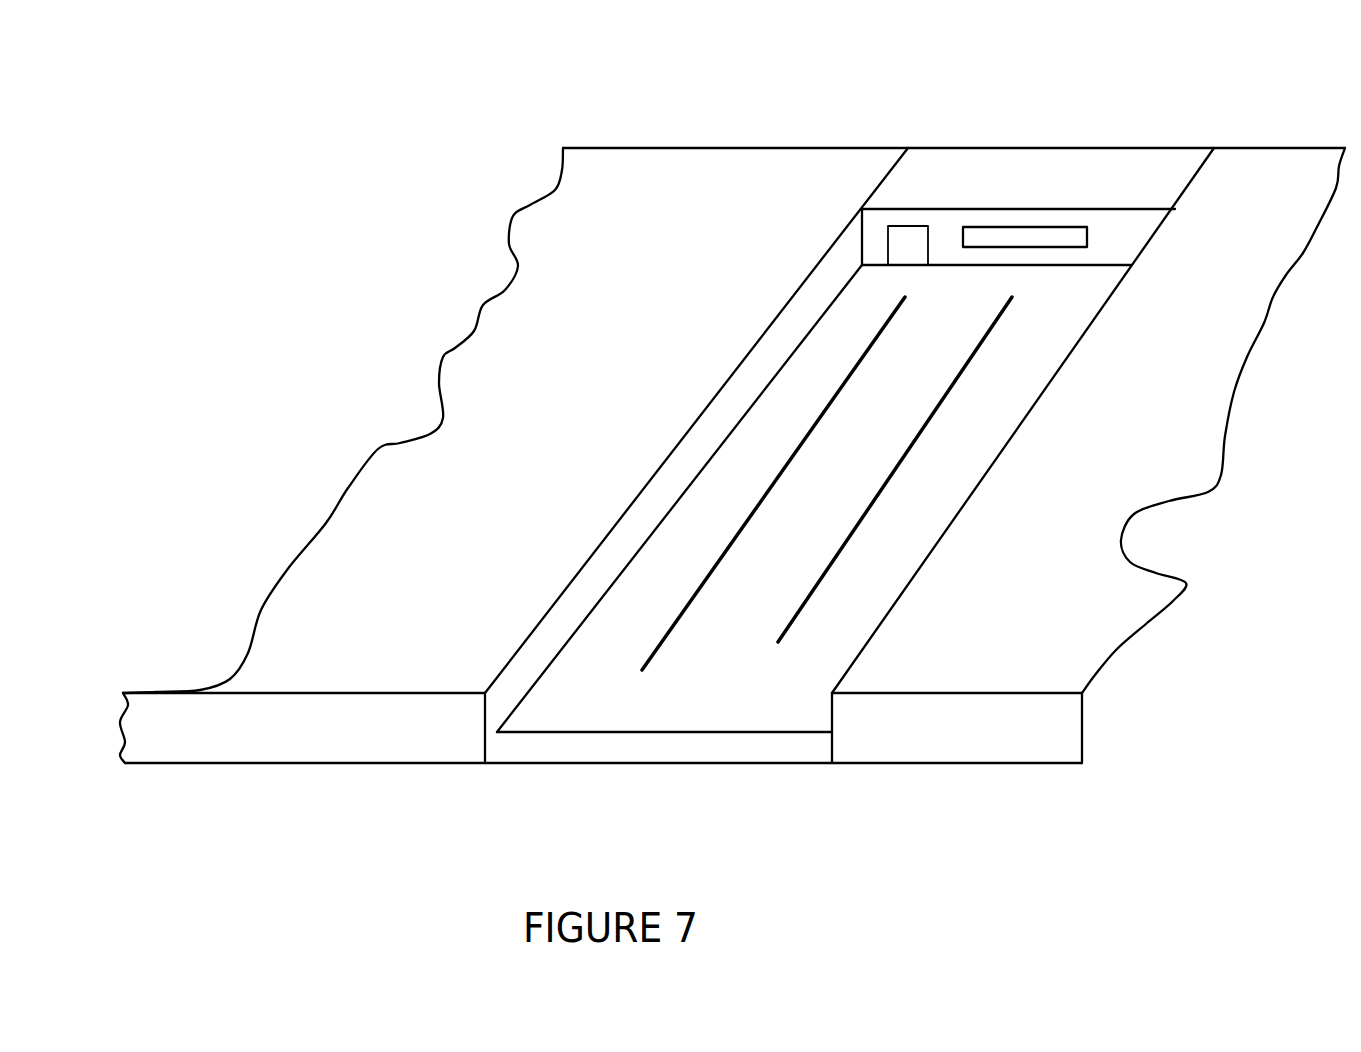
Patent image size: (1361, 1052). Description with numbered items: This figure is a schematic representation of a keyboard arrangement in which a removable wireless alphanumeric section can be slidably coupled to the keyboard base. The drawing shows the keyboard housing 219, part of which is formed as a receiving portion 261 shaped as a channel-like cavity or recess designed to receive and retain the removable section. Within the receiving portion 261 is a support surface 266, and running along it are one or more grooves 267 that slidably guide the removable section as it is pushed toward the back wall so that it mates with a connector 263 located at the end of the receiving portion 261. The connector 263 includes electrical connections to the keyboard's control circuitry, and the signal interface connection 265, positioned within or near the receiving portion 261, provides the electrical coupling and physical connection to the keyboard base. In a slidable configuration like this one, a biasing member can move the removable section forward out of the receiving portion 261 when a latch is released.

The keyboard housing 219 is at (678, 237).
The receiving portion 261 is at (630, 720).
The connector 263 is at (1028, 225).
The signal interface connection 265 is at (910, 245).
The support surface 266 is at (813, 653).
The grooves 267 is at (880, 500).